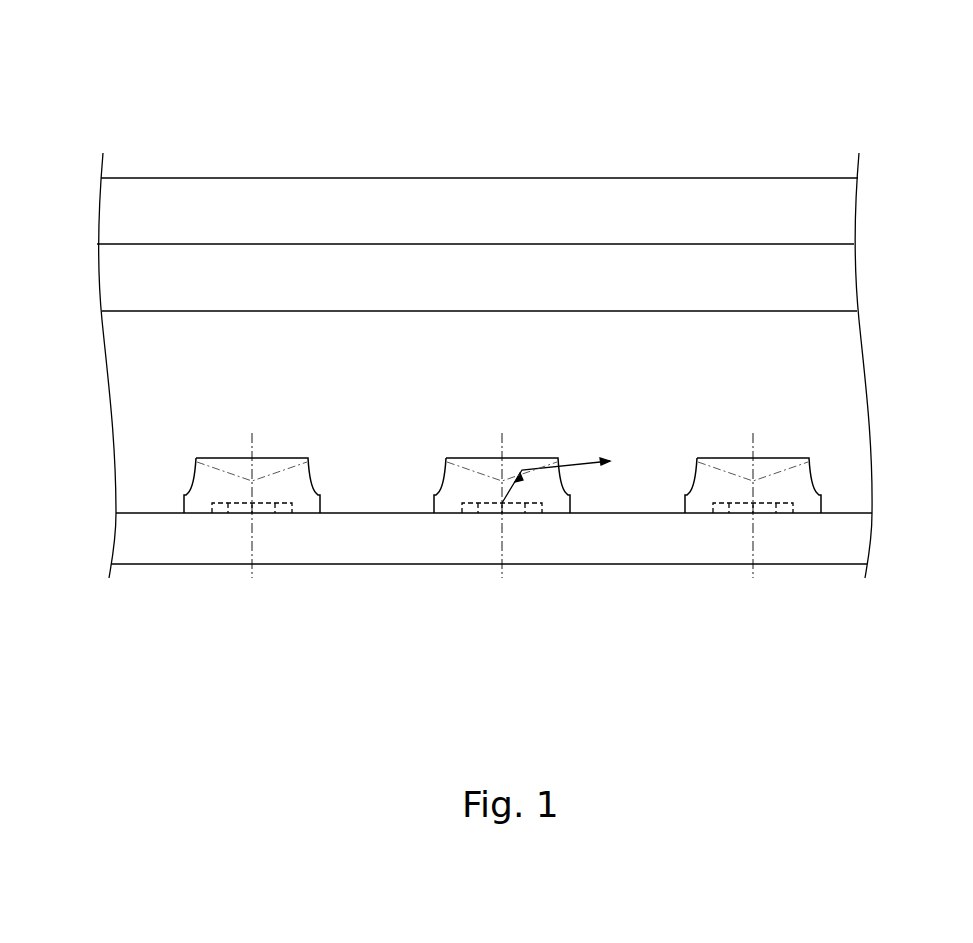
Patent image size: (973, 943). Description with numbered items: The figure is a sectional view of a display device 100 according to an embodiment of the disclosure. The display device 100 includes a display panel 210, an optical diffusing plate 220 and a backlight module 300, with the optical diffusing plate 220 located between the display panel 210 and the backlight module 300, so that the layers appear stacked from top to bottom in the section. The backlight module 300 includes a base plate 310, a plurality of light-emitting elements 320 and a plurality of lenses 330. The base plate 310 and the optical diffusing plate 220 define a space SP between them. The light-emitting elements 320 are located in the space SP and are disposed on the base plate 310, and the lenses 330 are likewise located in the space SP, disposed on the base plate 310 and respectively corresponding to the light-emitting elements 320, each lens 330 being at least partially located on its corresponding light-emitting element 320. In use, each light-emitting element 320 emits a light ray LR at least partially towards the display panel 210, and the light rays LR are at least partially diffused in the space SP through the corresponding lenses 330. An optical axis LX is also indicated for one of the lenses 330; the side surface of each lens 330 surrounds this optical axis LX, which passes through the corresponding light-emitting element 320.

The display device 100 is at (103, 66).
The display panel 210 is at (845, 211).
The optical diffusing plate 220 is at (846, 275).
The backlight module 300 is at (848, 622).
The base plate 310 is at (714, 545).
The light-emitting elements 320 is at (765, 507).
The lenses 330 is at (800, 493).
The space SP is at (789, 429).
The optical axis LX is at (753, 447).
The light ray LR is at (585, 465).